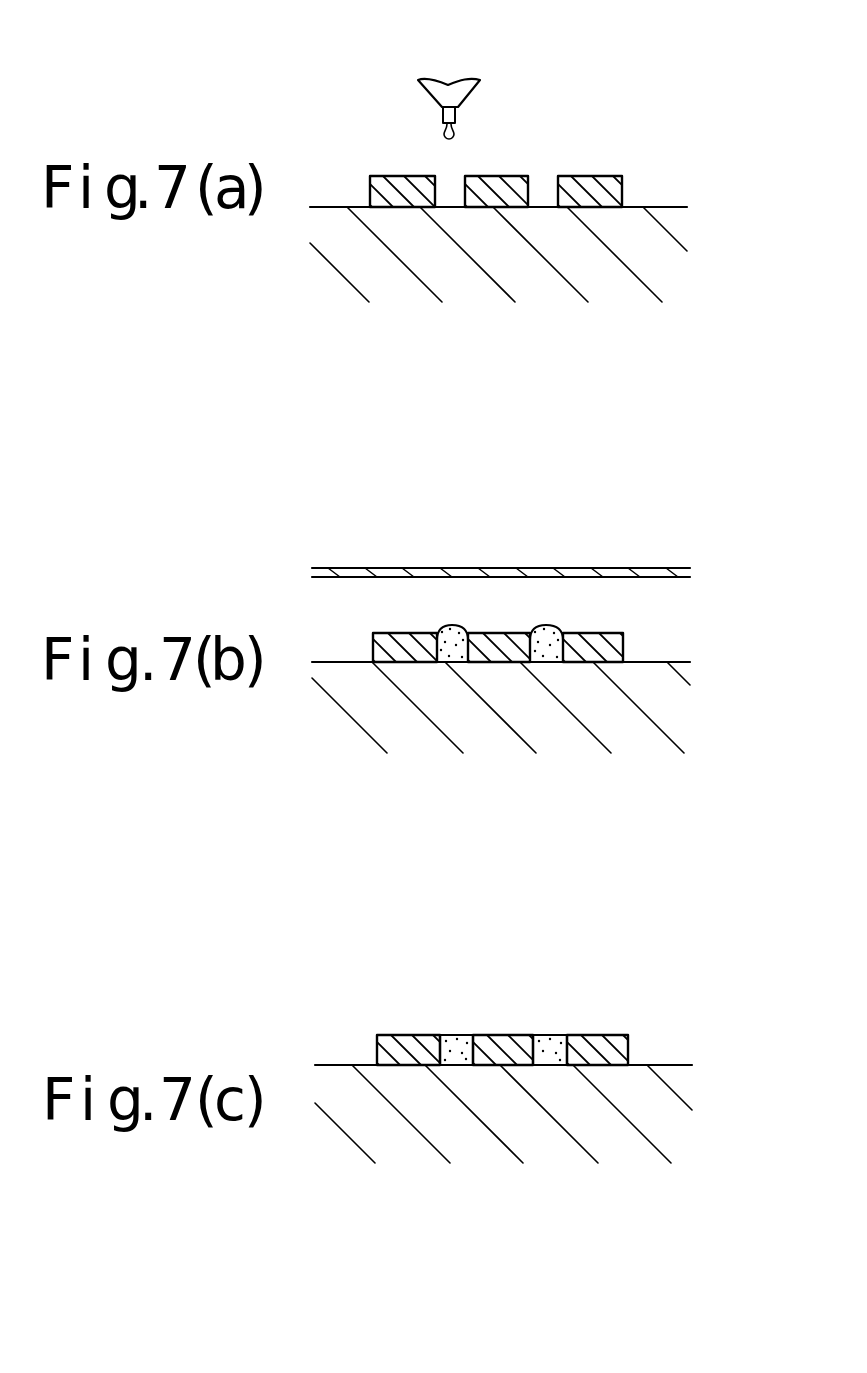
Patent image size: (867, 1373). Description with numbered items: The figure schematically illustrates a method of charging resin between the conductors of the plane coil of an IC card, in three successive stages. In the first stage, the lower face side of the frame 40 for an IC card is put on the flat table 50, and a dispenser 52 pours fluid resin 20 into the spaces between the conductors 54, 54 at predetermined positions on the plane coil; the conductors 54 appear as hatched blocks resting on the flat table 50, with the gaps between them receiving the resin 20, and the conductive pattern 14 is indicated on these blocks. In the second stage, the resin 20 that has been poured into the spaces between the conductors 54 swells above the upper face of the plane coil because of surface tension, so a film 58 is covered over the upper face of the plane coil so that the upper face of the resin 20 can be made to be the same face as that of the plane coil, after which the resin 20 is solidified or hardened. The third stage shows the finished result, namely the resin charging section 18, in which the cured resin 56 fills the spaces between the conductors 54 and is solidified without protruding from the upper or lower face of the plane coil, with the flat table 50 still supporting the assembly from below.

In FIG. 7A, the conductive pattern / electrode 14 is at (503, 183).
In FIG. 7B, the conductive pattern / electrode 14 is at (607, 645).
In FIG. 7C, the conductive pattern / electrode 14 is at (400, 1047).
In FIG. 7C, the resin charging section 18 is at (595, 1020).
In FIG. 7A, the resin 20 is at (454, 134).
In FIG. 7B, the resin 20 is at (460, 635).
In FIG. 7A, the frame for an IC card 40 is at (399, 133).
In FIG. 7A, the flat table 50 is at (638, 240).
In FIG. 7B, the flat table 50 is at (650, 710).
In FIG. 7C, the flat table 50 is at (653, 1122).
In FIG. 7A, the dispenser 52 is at (460, 92).
In FIG. 7A, the conductors 54 is at (450, 195).
In FIG. 7B, the conductors 54 is at (438, 652).
In FIG. 7C, the conductors 54 is at (538, 1057).
In FIG. 7C, the cured resin 56 is at (455, 1047).
In FIG. 7B, the film 58 is at (648, 572).